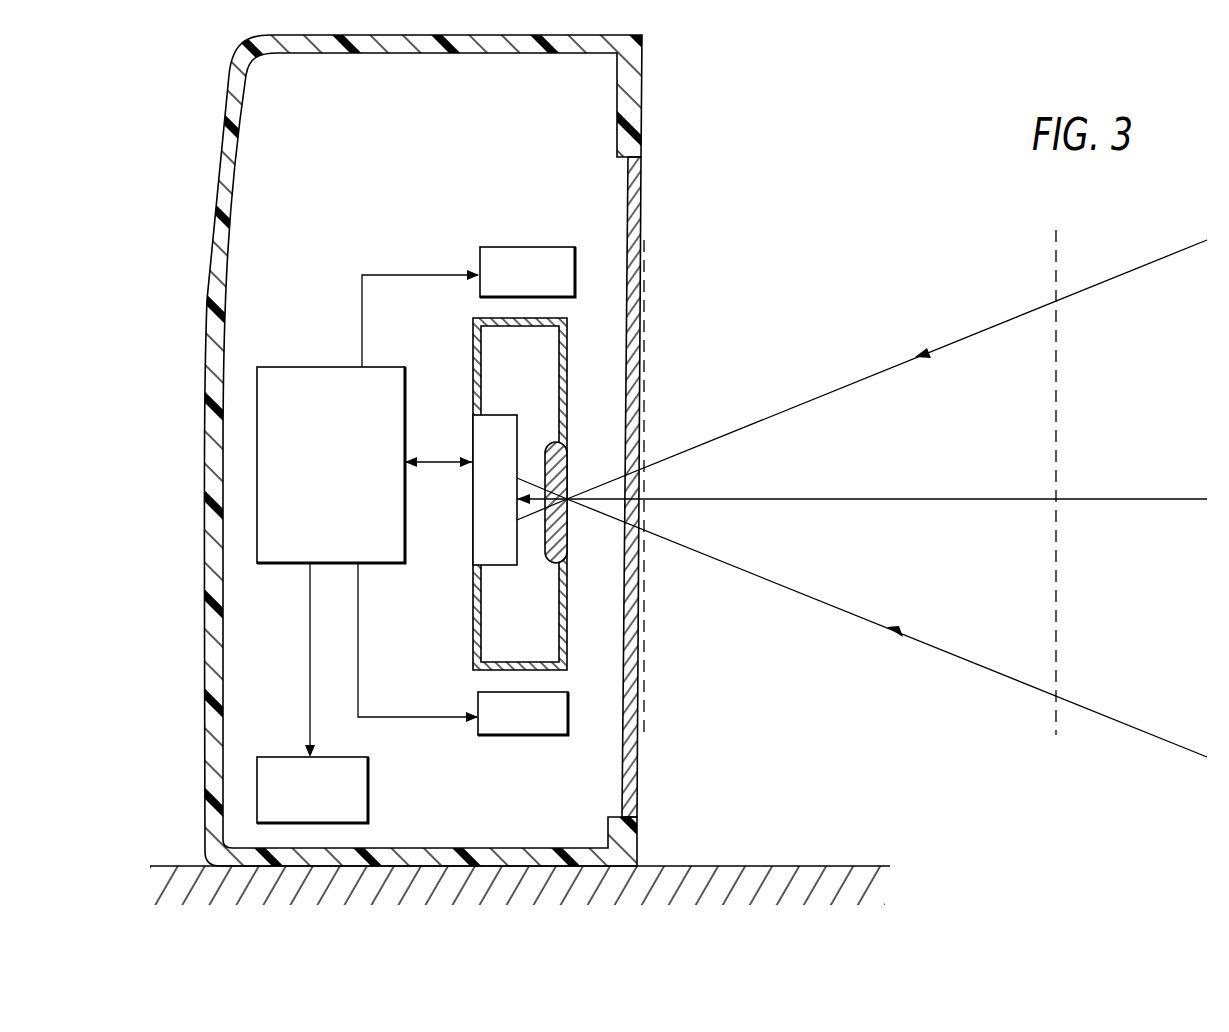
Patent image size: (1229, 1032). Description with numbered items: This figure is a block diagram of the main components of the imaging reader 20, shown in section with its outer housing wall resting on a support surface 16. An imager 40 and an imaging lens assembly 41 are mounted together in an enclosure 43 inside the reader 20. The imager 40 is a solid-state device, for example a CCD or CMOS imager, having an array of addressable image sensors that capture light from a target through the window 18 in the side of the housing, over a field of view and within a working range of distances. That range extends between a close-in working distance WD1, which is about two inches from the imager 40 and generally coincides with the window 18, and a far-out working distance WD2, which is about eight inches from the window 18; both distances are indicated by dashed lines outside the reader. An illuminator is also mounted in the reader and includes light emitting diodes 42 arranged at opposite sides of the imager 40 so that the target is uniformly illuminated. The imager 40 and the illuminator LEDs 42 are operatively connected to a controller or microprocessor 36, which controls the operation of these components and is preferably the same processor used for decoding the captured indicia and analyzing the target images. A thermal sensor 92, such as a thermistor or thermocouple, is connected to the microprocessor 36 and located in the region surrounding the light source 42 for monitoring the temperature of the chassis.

The reader 20 is at (649, 40).
The window 18 is at (643, 202).
The support surface 16 is at (805, 866).
The microprocessor 36 is at (387, 542).
The imager 40 is at (478, 422).
The imaging lens assembly 41 is at (558, 565).
The light emitting diode 42 is at (730, 670).
The enclosure 43 is at (540, 318).
The thermal sensor 92 is at (368, 778).
The close-in working distance WD1 is at (644, 735).
The far-out working distance WD2 is at (1060, 228).